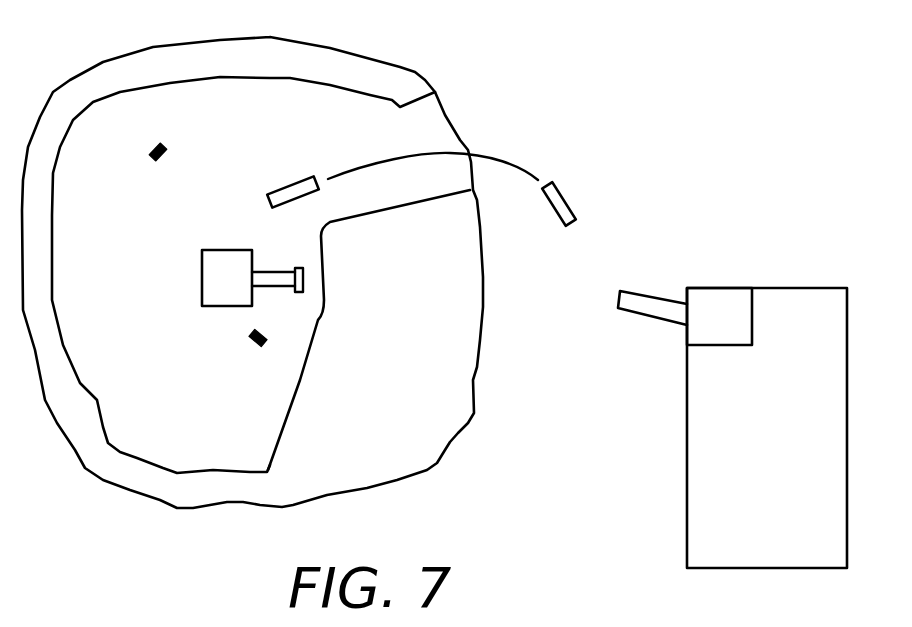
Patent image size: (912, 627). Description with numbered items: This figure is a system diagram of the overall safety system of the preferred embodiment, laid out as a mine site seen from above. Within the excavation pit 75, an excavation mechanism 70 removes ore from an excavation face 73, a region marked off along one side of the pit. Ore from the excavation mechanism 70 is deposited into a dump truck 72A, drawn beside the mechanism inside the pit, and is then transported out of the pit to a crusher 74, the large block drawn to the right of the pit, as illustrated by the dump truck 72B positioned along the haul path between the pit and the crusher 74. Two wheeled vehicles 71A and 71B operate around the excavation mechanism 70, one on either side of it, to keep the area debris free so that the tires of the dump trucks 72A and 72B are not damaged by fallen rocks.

The excavation mechanism 70 is at (197, 277).
The wheeled vehicle 71A is at (170, 143).
The wheeled vehicle 71B is at (253, 343).
The dump truck 72A is at (267, 205).
The dump truck 72B is at (567, 197).
The excavation face 73 is at (322, 317).
The crusher 74 is at (700, 309).
The excavation pit 75 is at (228, 449).